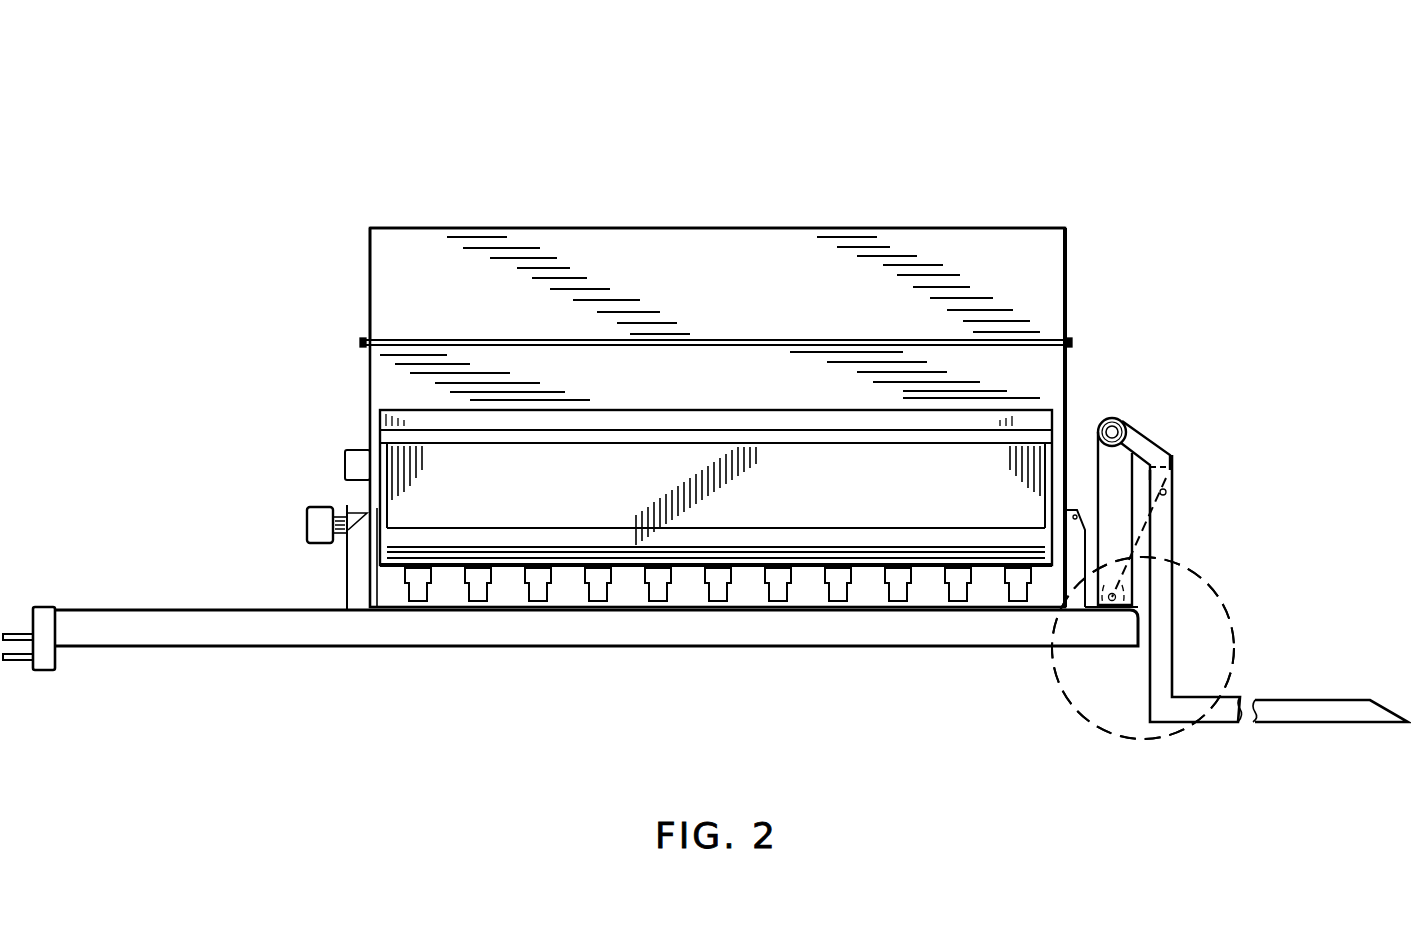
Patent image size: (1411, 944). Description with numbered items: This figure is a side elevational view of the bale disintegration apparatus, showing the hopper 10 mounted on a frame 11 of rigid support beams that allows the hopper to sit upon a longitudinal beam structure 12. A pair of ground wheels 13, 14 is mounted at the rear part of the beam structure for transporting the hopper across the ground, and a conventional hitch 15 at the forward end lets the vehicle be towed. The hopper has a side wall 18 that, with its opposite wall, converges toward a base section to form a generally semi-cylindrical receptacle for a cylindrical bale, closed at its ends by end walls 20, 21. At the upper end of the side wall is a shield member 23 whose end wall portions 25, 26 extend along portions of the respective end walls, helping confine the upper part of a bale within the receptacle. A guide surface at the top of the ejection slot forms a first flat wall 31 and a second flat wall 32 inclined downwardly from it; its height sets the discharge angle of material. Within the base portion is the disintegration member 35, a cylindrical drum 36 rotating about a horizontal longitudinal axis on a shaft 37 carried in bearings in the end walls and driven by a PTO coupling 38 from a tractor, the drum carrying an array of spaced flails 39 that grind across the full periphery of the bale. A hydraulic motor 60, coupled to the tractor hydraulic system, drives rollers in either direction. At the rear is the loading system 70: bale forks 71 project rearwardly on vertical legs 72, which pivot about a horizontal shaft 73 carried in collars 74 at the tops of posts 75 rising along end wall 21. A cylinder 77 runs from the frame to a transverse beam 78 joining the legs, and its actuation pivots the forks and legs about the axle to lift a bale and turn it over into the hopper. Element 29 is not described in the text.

The hopper 10 is at (1130, 252).
The frame 11 is at (342, 577).
The longitudinal beam structure 12 is at (688, 645).
The ground wheel 13 is at (1080, 718).
The ground wheel 14 is at (1143, 648).
The hitch 15 is at (23, 608).
The side wall 18 is at (788, 376).
The end wall 20 is at (370, 380).
The end wall 21 is at (1070, 372).
The shield member 23 is at (751, 258).
The end wall portion 25 is at (370, 276).
The end wall portion 26 is at (1068, 282).
The nozzle manifold plate 29 is at (623, 597).
The first flat wall 31 is at (884, 501).
The second flat wall 32 is at (637, 426).
The disintegration member 35 is at (747, 584).
The cylindrical drum 36 is at (562, 546).
The shaft 37 is at (347, 512).
The PTO coupling 38 is at (310, 522).
The flails 39 is at (428, 598).
The hydraulic motor 60 is at (350, 462).
The loading system 70 is at (1215, 530).
The bale forks 71 is at (1305, 697).
The vertical legs 72 is at (1175, 632).
The horizontal shaft 73 is at (1138, 420).
The collar 74 is at (1107, 420).
The post 75 is at (1142, 455).
The cylinder 77 is at (1158, 550).
The transverse beam 78 is at (1176, 468).